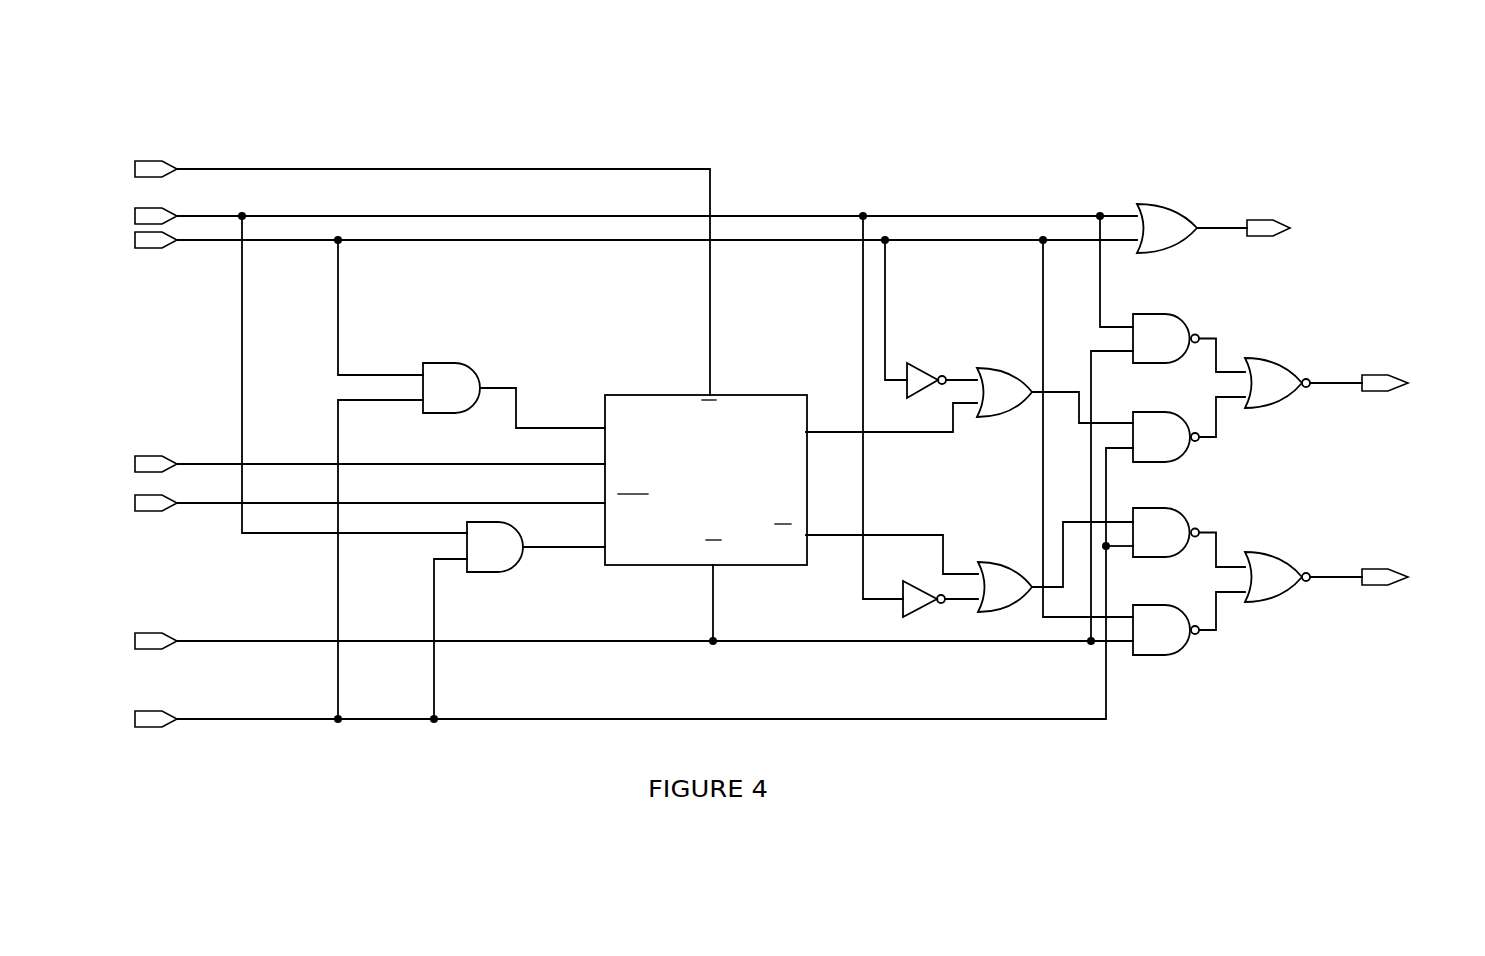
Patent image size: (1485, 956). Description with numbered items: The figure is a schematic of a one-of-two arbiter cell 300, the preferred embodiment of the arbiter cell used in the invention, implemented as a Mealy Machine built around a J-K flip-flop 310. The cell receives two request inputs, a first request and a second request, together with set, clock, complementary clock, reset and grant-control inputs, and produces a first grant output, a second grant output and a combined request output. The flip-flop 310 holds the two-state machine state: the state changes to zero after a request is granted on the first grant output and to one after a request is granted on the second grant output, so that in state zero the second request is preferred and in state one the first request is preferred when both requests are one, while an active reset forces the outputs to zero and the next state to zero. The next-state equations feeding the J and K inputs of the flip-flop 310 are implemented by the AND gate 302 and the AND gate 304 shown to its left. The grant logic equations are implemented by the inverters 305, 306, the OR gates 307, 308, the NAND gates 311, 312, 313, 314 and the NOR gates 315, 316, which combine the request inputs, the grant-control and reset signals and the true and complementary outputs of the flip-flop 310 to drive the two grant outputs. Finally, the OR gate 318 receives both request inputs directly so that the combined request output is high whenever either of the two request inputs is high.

The arbiter cell 300 is at (973, 100).
The AND gate 302 is at (453, 372).
The AND gate 304 is at (488, 563).
The inverter 305 is at (908, 367).
The inverter 306 is at (912, 608).
The OR gate 307 is at (1010, 408).
The OR gate 308 is at (993, 570).
The J-K flip-flop 310 is at (735, 512).
The NAND gate 311 is at (1162, 325).
The NAND gate 312 is at (1163, 446).
The NAND gate 313 is at (1170, 523).
The NAND gate 314 is at (1170, 635).
The NOR gate 315 is at (1278, 378).
The NOR gate 316 is at (1278, 590).
The OR gate 318 is at (1158, 212).